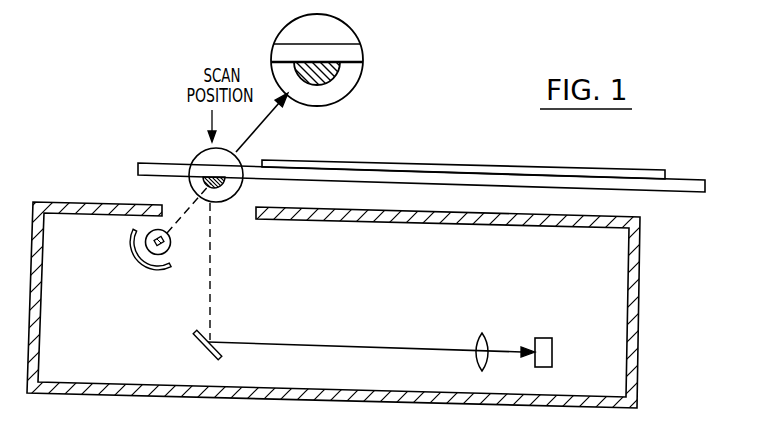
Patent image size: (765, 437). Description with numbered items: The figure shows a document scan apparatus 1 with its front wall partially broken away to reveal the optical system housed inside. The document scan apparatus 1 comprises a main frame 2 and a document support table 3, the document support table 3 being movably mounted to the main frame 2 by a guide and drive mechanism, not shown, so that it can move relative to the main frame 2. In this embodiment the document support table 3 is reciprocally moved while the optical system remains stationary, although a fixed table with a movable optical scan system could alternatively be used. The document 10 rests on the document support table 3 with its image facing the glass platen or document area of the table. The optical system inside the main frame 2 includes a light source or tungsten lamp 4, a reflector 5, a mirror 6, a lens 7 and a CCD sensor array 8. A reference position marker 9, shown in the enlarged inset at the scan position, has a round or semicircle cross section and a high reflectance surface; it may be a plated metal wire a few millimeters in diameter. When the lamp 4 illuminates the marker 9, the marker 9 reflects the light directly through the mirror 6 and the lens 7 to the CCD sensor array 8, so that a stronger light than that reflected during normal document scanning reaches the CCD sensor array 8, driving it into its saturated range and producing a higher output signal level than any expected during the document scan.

The document scan apparatus 1 is at (368, 305).
The main frame 2 is at (638, 327).
The document support table 3 is at (137, 169).
The light source or tungsten lamp 4 is at (171, 245).
The reflector 5 is at (145, 262).
The mirror 6 is at (198, 348).
The lens 7 is at (483, 334).
The CCD sensor array 8 is at (543, 338).
The reference position marker 9 is at (226, 185).
The document 10 is at (411, 163).